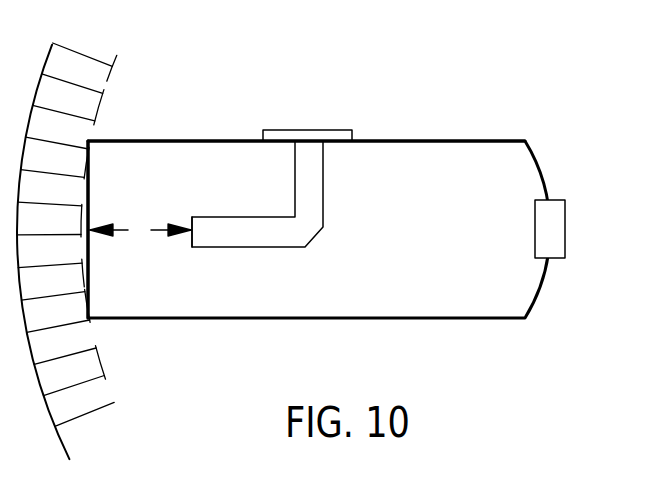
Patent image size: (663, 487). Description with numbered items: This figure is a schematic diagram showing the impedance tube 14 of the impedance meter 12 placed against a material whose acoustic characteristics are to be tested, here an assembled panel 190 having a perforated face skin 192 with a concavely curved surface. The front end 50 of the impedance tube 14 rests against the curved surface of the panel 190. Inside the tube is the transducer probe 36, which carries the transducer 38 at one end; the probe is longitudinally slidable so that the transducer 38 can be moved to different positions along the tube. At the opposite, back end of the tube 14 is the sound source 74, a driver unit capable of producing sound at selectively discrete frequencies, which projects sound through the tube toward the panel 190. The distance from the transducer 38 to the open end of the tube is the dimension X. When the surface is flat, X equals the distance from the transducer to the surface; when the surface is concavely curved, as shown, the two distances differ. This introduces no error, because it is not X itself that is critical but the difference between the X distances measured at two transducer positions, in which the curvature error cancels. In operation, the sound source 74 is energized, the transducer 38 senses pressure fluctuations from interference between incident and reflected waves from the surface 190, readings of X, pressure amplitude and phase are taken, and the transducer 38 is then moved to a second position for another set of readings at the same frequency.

The assembled panel 190 is at (62, 47).
The perforated face skin 192 is at (93, 108).
The impedance meter 12 is at (362, 319).
The impedance tube 14 is at (442, 302).
The front end 50 is at (90, 317).
The transducer probe 36 is at (303, 249).
The transducer 38 is at (193, 248).
The sound source 74 is at (566, 240).
The distance X is at (140, 232).